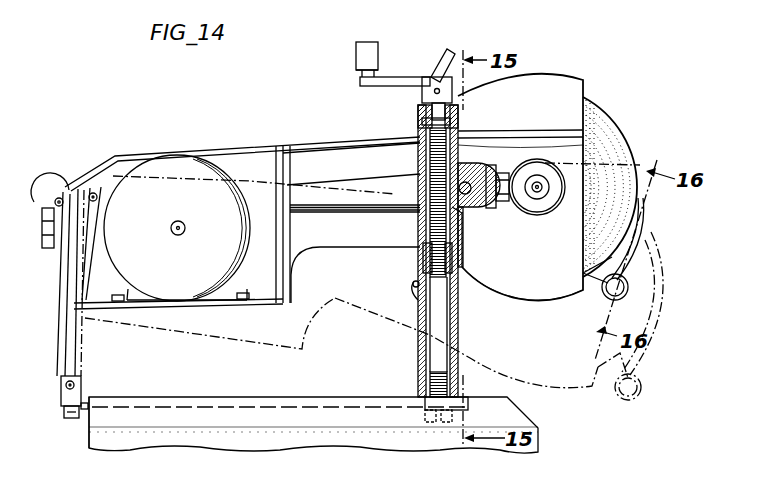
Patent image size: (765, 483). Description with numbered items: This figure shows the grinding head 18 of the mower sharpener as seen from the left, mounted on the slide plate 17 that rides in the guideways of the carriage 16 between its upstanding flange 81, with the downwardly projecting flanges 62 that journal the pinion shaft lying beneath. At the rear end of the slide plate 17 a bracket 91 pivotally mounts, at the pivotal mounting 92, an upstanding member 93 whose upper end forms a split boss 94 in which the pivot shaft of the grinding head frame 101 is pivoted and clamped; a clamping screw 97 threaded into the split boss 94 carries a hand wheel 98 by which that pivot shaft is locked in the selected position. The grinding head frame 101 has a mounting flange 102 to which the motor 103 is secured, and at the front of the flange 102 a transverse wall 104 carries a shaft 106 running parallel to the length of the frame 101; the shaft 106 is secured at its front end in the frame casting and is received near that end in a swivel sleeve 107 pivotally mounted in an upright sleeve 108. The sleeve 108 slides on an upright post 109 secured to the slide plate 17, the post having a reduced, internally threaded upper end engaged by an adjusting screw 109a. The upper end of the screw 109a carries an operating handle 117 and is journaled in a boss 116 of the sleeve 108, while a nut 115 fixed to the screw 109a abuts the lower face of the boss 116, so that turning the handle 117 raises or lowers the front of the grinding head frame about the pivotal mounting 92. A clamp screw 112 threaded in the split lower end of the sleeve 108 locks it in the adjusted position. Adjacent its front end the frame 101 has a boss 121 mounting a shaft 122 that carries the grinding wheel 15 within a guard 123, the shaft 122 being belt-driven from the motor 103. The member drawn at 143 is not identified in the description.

The grinding wheel 15 is at (622, 161).
The carriage 16 is at (273, 430).
The slide plate 17 is at (83, 410).
The grinder head 18 is at (581, 84).
The downwardly projecting flanges 62 is at (231, 440).
The upstanding wall or flange 81 is at (219, 399).
The bracket 91 is at (62, 401).
The pivotal mounting 92 is at (64, 386).
The upstanding member 93 is at (62, 311).
The split boss 94 is at (41, 214).
The clamping screw 97 is at (59, 198).
The hand wheel 98 is at (42, 192).
The grinding head frame 101 is at (305, 147).
The motor mounting flange 102 is at (268, 304).
The motor 103 is at (192, 210).
The transverse wall 104 is at (284, 254).
The shaft 106 is at (355, 206).
The swivel sleeve 107 is at (490, 162).
The upright sleeve 108 is at (461, 234).
The upright post 109 is at (425, 367).
The adjusting screw 109a is at (420, 256).
The clamp screw 112 is at (412, 285).
The nut 115 is at (422, 122).
The boss 116 is at (453, 117).
The operating handle 117 is at (390, 77).
The boss 121 is at (547, 206).
The shaft 122 is at (537, 192).
The guard 123 is at (528, 283).
The lever 143 is at (436, 60).